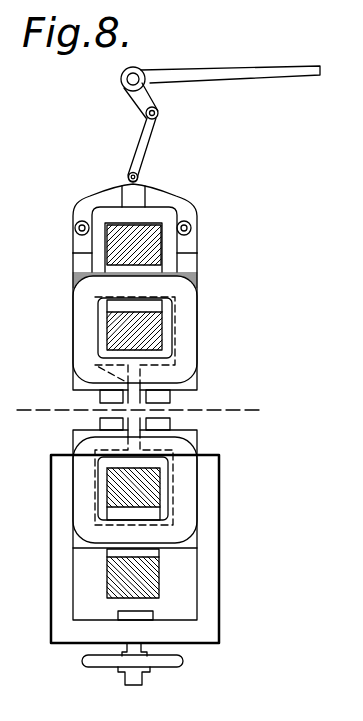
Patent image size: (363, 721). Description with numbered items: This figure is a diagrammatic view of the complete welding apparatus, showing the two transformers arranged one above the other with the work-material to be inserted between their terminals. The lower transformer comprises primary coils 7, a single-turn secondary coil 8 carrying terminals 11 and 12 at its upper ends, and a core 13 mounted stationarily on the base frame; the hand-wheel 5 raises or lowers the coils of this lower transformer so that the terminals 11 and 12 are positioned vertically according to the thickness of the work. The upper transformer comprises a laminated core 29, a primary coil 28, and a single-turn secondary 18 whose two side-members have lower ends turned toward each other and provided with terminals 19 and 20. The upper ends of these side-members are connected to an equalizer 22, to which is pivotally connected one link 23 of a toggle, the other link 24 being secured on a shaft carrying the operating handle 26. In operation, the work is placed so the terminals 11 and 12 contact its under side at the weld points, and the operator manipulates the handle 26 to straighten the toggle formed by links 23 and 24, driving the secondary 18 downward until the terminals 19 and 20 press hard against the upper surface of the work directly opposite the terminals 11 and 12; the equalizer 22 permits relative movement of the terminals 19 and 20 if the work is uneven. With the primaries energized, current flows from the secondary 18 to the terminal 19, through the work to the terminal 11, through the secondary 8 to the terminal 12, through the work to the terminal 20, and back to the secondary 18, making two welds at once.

The hand-wheel 5 is at (87, 657).
The primary coils 7 is at (185, 502).
The secondary coil 8 is at (188, 440).
The terminal 11 is at (107, 422).
The terminal 12 is at (168, 422).
The core 13 is at (155, 583).
The secondary 18 is at (77, 377).
The terminal 19 is at (107, 397).
The terminal 20 is at (163, 398).
The equalizer 22 is at (102, 195).
The link 23 is at (147, 162).
The link 24 is at (153, 98).
The operating handle 26 is at (293, 73).
The coil 28 is at (185, 333).
The core 29 is at (163, 247).